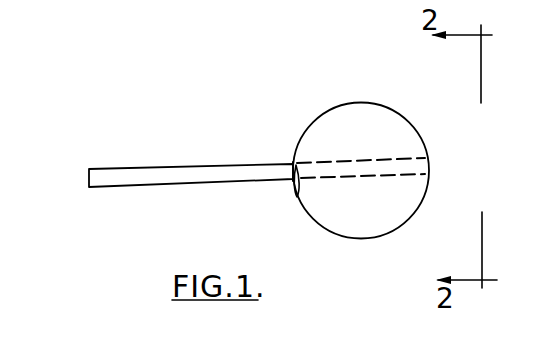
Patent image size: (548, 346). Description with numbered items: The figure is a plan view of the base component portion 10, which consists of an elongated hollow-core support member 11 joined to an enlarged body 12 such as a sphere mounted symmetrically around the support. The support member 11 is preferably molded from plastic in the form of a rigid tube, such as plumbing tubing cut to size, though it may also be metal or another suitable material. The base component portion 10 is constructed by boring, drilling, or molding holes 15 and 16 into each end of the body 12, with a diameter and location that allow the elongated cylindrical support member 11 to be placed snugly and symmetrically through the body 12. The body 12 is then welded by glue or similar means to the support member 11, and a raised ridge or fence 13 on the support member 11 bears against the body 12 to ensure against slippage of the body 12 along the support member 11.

The base component portion 10 is at (211, 153).
The elongated hollow-core support member 11 is at (165, 168).
The enlarged body 12 is at (397, 112).
The raised ridge or fence 13 is at (293, 163).
The hole 15 is at (298, 196).
The hole 16 is at (428, 172).